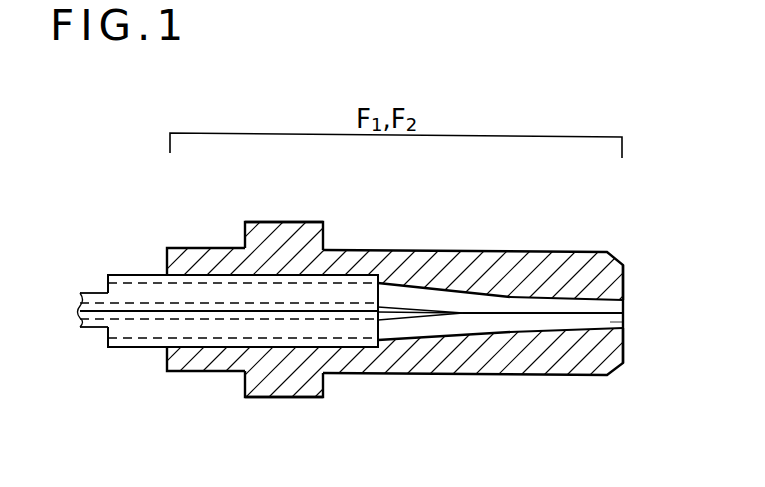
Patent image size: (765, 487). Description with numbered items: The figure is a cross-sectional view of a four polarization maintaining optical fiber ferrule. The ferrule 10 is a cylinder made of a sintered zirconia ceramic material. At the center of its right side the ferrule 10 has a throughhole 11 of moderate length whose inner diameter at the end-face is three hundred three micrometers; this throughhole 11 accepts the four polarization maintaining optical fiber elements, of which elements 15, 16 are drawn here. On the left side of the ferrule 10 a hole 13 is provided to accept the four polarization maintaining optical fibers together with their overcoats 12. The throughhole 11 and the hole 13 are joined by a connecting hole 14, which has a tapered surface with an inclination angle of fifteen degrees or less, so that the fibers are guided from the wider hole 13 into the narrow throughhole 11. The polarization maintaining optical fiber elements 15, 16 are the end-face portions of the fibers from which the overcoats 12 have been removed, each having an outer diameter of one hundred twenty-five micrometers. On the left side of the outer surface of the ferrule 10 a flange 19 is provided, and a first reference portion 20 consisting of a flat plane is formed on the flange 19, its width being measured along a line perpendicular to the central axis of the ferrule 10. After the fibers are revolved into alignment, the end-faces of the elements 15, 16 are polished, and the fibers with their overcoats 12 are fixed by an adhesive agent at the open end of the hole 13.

The ferrule 10 is at (550, 265).
The throughhole 11 is at (566, 330).
The overcoats 12 is at (137, 277).
The hole 13 is at (201, 342).
The connecting hole 14 is at (414, 334).
The polarization maintaining optical fiber element 15 is at (626, 299).
The polarization maintaining optical fiber element 16 is at (615, 322).
The flange 19 is at (308, 245).
The first reference portion 20 is at (272, 222).